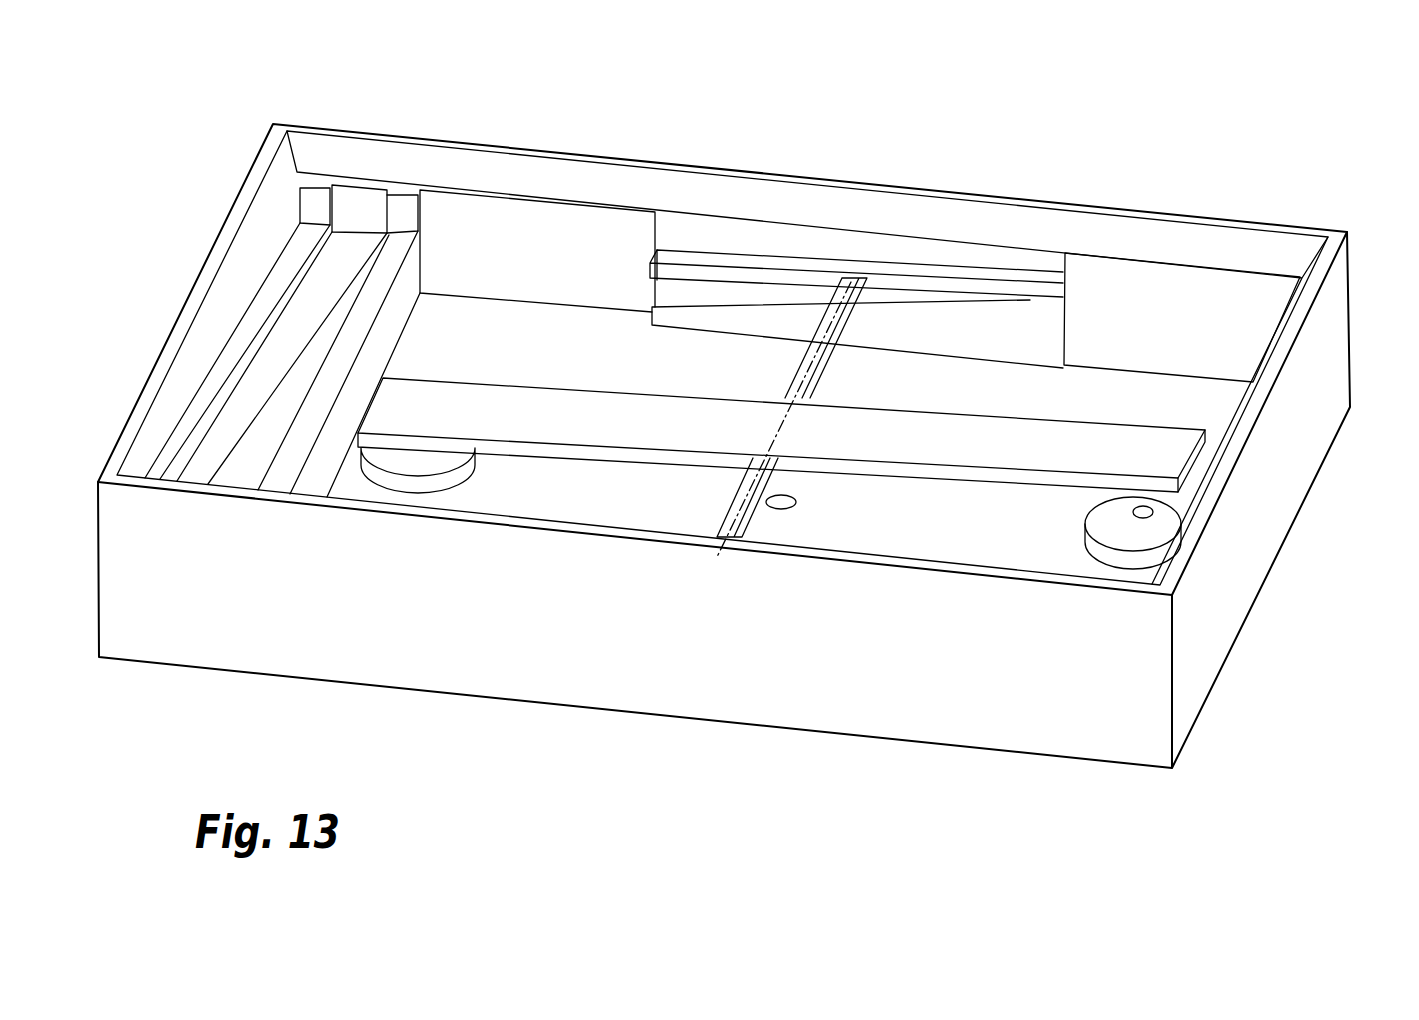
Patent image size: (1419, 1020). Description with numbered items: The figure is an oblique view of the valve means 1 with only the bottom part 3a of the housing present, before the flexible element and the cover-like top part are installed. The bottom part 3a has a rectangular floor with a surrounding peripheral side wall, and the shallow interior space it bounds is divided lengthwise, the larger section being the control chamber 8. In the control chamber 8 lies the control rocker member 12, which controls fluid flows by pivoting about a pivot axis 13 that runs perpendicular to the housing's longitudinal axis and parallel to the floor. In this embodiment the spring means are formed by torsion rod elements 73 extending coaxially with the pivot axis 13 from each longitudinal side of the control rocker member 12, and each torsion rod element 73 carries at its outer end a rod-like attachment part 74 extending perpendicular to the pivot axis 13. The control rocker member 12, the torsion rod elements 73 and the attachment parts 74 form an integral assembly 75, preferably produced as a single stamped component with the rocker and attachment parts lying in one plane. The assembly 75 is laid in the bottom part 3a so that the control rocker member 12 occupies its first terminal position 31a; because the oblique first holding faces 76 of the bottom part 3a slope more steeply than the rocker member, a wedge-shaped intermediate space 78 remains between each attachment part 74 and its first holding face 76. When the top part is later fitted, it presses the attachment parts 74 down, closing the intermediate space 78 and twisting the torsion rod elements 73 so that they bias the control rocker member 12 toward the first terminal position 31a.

The valve means 1 is at (1308, 212).
The bottom part 3a is at (1253, 527).
The control chamber 8 is at (1129, 309).
The control rocker member 12 is at (1140, 440).
The pivot axis 13 is at (838, 354).
The first terminal position 31a is at (498, 458).
The torsion rod element 73 is at (802, 372).
The attachment part 74 is at (975, 273).
The integral assembly 75 is at (861, 477).
The first holding face 76 is at (712, 303).
The intermediate space 78 is at (673, 288).